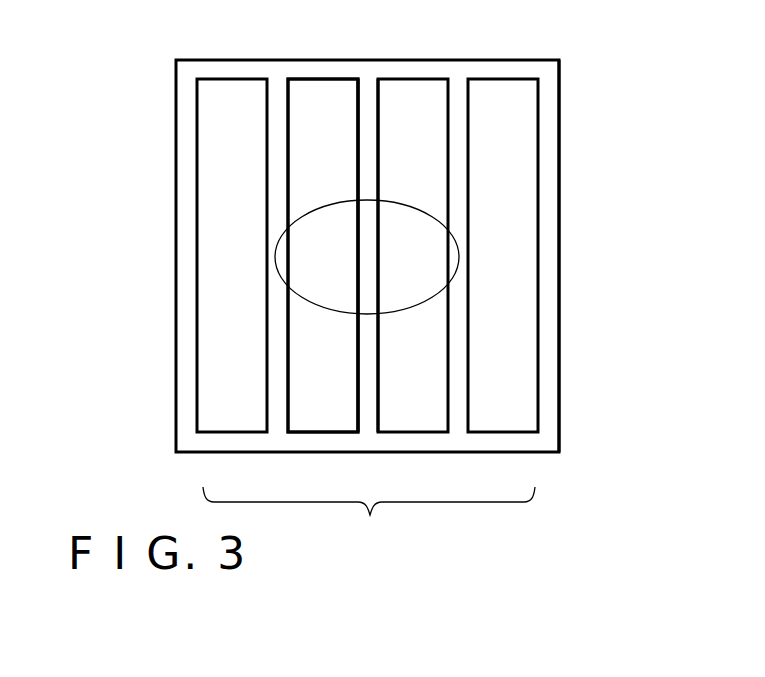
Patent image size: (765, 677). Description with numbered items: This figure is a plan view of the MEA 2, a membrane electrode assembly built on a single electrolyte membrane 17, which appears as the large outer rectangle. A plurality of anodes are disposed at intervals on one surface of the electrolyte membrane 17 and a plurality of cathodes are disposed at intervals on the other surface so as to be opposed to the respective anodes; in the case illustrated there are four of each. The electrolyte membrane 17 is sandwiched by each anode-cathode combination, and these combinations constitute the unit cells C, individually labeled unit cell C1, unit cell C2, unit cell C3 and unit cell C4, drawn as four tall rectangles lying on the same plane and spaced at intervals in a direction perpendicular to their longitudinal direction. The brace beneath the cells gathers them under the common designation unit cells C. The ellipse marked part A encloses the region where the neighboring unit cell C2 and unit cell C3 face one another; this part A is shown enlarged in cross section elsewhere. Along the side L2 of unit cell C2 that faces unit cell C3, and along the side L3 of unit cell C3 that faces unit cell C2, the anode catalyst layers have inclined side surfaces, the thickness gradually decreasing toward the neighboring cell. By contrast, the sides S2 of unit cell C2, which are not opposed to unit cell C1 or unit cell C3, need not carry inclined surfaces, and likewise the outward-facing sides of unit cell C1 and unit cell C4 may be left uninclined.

The MEA 2 is at (596, 111).
The electrolyte membrane 17 is at (561, 221).
The unit cell C1 is at (236, 436).
The unit cell C2 is at (327, 436).
The unit cell C3 is at (417, 436).
The unit cell C4 is at (508, 436).
The side S2 is at (301, 78).
The side L2 is at (361, 106).
The side L3 is at (372, 106).
The part A is at (421, 209).
The unit cells C is at (369, 518).